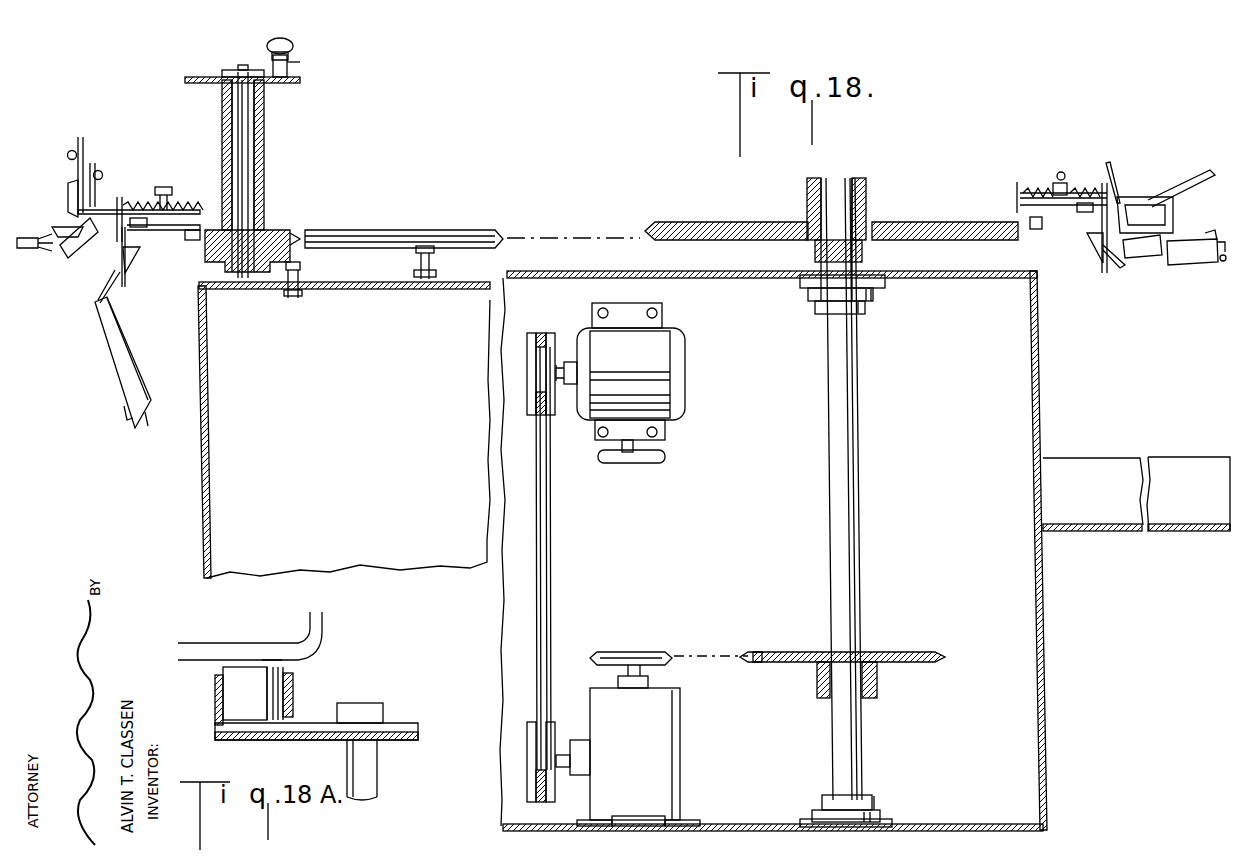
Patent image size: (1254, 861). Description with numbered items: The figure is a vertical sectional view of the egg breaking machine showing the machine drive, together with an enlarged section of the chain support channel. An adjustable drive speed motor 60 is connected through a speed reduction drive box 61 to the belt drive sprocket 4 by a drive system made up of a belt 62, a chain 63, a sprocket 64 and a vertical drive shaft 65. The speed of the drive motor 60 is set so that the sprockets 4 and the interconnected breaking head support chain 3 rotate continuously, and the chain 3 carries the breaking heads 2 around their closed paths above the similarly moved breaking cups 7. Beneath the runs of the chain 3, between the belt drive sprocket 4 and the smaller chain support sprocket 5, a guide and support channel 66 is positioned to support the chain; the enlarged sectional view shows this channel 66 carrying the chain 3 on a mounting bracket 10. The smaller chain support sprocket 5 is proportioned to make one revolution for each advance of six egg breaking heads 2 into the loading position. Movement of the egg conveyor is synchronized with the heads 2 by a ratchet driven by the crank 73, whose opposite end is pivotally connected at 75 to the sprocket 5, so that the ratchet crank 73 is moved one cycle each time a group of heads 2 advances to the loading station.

In FIG. 18, the breaking head 2 is at (82, 160).
In FIG. 18, the breaking head support chain 3 is at (558, 236).
In FIG. 18A, the breaking head support chain 3 is at (240, 700).
In FIG. 18, the belt drive sprocket 4 is at (908, 222).
In FIG. 18, the smaller chain support sprocket 5 is at (280, 230).
In FIG. 18, the breaking cup 7 is at (130, 355).
In FIG. 18A, the bracket 10 is at (310, 622).
In FIG. 18, the adjustable drive speed motor 60 is at (662, 372).
In FIG. 18, the speed reduction drive box 61 is at (652, 754).
In FIG. 18, the belt 62 is at (552, 520).
In FIG. 18, the chain 63 is at (718, 652).
In FIG. 18, the sprocket 64 is at (905, 650).
In FIG. 18, the vertical drive shaft 65 is at (860, 458).
In FIG. 18, the guide and support channel 66 is at (388, 230).
In FIG. 18A, the guide and support channel 66 is at (300, 683).
In FIG. 18, the crank 73 is at (267, 46).
In FIG. 18, the pivotal connection 75 is at (300, 65).